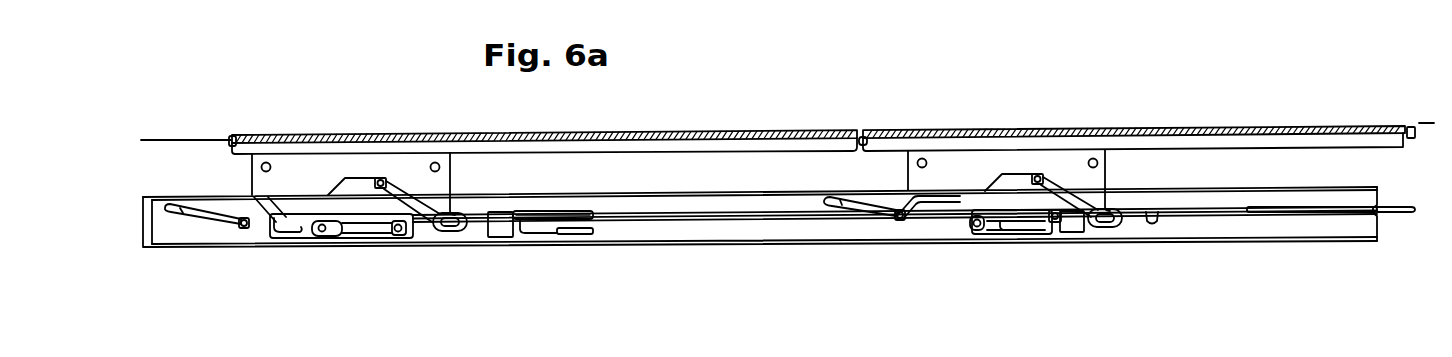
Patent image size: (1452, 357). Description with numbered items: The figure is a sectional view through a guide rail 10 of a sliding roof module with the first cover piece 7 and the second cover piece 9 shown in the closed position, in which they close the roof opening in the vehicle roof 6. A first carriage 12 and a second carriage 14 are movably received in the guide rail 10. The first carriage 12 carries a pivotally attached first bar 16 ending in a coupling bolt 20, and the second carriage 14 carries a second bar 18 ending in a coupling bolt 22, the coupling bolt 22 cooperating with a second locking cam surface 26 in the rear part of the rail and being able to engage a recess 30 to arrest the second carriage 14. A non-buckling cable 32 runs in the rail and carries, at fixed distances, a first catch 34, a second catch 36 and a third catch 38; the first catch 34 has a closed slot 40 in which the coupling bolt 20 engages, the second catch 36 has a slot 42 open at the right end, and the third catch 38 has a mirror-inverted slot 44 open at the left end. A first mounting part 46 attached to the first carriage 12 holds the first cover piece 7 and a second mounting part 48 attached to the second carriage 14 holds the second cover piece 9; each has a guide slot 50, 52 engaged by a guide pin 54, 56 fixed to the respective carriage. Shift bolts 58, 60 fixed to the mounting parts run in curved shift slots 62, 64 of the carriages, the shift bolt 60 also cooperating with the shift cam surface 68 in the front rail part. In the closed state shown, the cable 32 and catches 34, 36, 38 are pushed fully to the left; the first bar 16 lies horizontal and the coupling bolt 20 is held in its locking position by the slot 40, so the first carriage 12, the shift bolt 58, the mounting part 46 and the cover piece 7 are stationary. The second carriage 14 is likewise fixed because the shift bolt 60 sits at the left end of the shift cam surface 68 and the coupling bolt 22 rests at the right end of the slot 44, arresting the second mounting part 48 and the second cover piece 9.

The vehicle roof 6 is at (168, 140).
The first cover piece 7 is at (713, 135).
The second cover piece 9 is at (1265, 128).
The guide rail 10 is at (690, 246).
The first carriage 12 is at (220, 206).
The second carriage 14 is at (880, 198).
The first bar 16 is at (325, 232).
The second bar 18 is at (980, 234).
The first coupling bolt 20 is at (398, 232).
The second coupling bolt 22 is at (1057, 222).
The second locking cam surface 26 is at (1258, 213).
The recess 30 is at (1152, 223).
The cable 32 is at (1408, 212).
The first catch 34 is at (305, 217).
The second catch 36 is at (503, 238).
The third catch 38 is at (1082, 232).
The slot 40 is at (299, 233).
The slot 42 is at (568, 233).
The slot 44 is at (1003, 231).
The first mounting part 46 is at (409, 163).
The second mounting part 48 is at (1060, 163).
The guide slot 50 is at (421, 196).
The guide slot 52 is at (1071, 188).
The guide pin 54 is at (379, 177).
The guide pin 56 is at (1037, 174).
The shift bolt 58 is at (244, 229).
The shift bolt 60 is at (900, 225).
The shift slot 62 is at (178, 210).
The shift slot 64 is at (835, 208).
The shift cam surface 68 is at (957, 199).